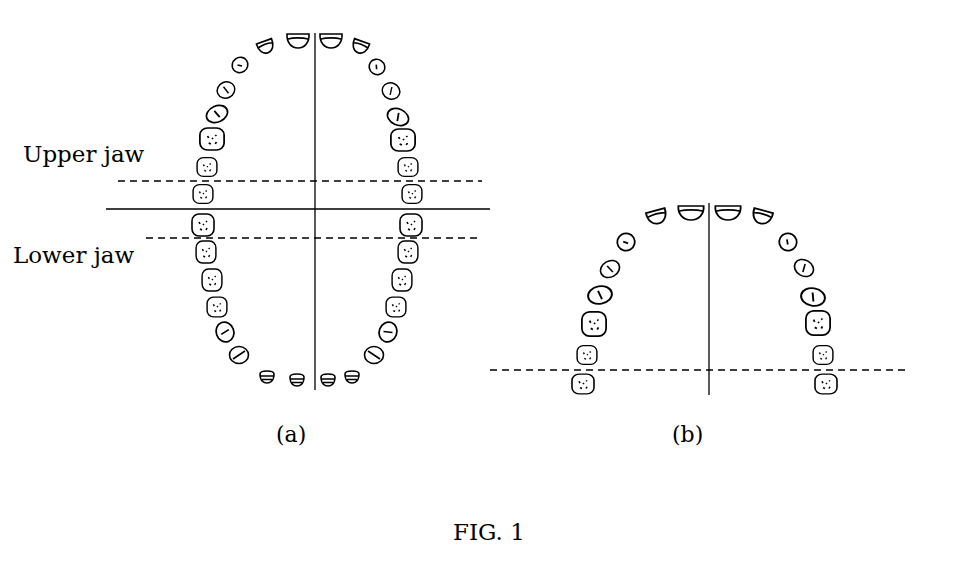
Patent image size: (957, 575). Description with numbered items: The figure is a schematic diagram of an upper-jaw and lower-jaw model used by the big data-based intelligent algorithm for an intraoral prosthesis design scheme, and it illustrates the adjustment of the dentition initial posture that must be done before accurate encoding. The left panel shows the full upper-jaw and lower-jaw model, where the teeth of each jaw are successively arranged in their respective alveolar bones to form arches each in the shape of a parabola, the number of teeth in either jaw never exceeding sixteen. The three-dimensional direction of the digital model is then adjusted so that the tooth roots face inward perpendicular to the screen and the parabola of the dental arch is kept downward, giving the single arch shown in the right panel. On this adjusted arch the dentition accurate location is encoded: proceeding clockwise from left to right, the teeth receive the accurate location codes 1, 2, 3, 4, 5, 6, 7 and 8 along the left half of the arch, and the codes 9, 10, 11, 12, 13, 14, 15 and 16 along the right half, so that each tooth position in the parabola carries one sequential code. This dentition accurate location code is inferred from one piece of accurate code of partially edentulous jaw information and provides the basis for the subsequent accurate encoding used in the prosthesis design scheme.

The dentition accurate location code 1 is at (570, 384).
The dentition accurate location code 2 is at (576, 354).
The dentition accurate location code 3 is at (581, 324).
The dentition accurate location code 4 is at (587, 292).
The dentition accurate location code 5 is at (601, 265).
The dentition accurate location code 6 is at (620, 236).
The dentition accurate location code 7 is at (657, 210).
The dentition accurate location code 8 is at (690, 203).
The dentition accurate location code 9 is at (727, 203).
The dentition accurate location code 10 is at (764, 209).
The dentition accurate location code 11 is at (796, 236).
The dentition accurate location code 12 is at (813, 265).
The dentition accurate location code 13 is at (825, 296).
The dentition accurate location code 14 is at (831, 323).
The dentition accurate location code 15 is at (838, 354).
The dentition accurate location code 16 is at (842, 384).